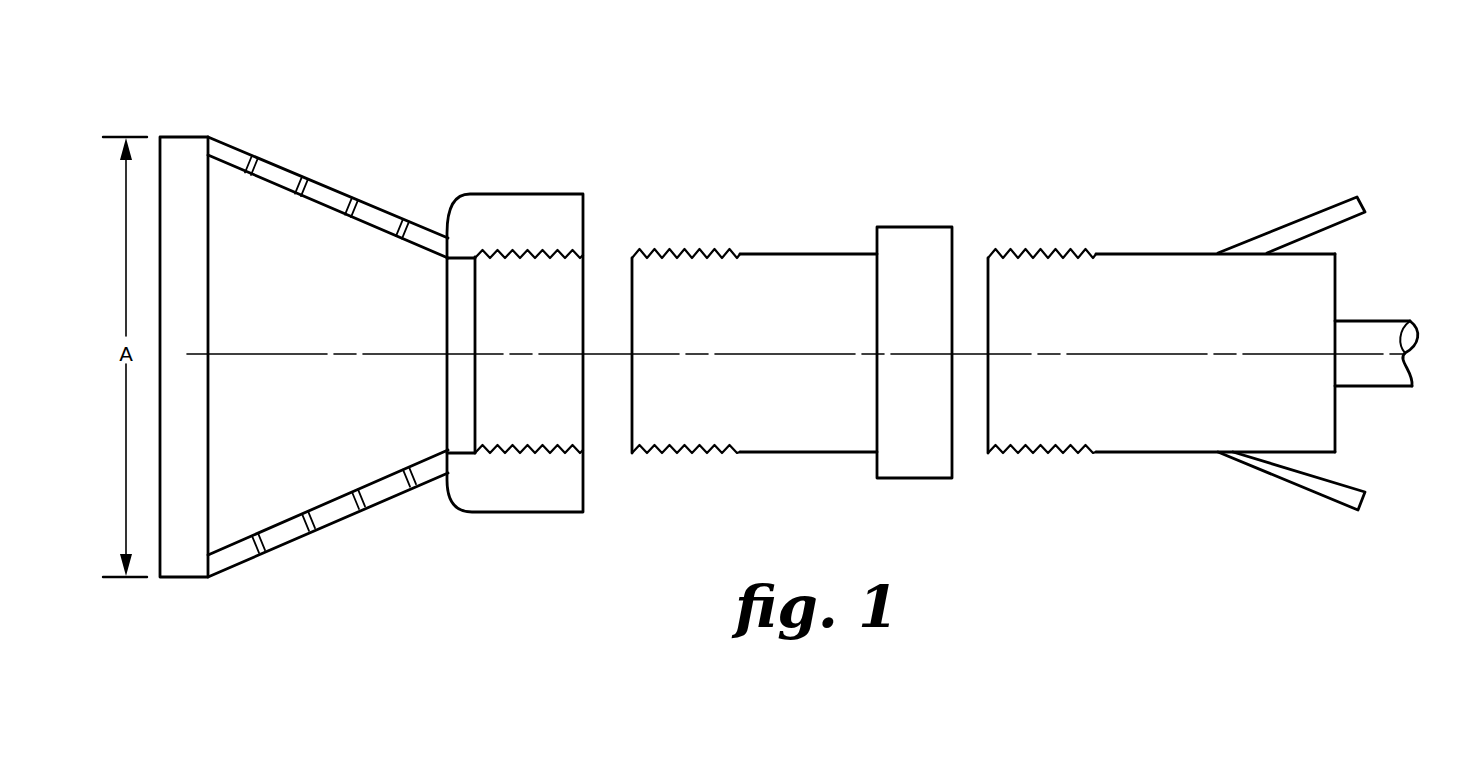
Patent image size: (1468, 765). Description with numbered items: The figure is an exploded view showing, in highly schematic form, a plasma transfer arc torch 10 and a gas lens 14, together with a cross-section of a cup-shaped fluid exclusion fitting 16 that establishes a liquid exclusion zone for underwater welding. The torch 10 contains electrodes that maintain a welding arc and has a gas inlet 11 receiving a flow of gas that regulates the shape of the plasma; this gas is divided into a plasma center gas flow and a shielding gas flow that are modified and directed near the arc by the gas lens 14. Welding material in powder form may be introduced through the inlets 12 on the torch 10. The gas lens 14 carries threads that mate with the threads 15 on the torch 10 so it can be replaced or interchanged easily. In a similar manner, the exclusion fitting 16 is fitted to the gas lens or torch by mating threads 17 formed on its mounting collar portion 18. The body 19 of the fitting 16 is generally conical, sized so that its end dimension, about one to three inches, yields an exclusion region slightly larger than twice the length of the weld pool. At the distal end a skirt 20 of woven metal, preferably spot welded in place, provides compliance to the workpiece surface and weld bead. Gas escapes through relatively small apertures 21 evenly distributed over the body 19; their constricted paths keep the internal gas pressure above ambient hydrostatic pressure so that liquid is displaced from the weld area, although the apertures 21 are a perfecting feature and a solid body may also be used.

The torch 10 is at (1162, 216).
The gas inlet 11 is at (1372, 320).
The inlets 12 is at (1307, 215).
The gas lens 14 is at (828, 254).
The threads 15 is at (1030, 255).
The fluid exclusion fitting 16 is at (393, 176).
The mating threads 17 is at (538, 257).
The mounting collar portion 18 is at (507, 207).
The body 19 is at (283, 167).
The skirt 20 is at (183, 137).
The apertures 21 is at (258, 557).